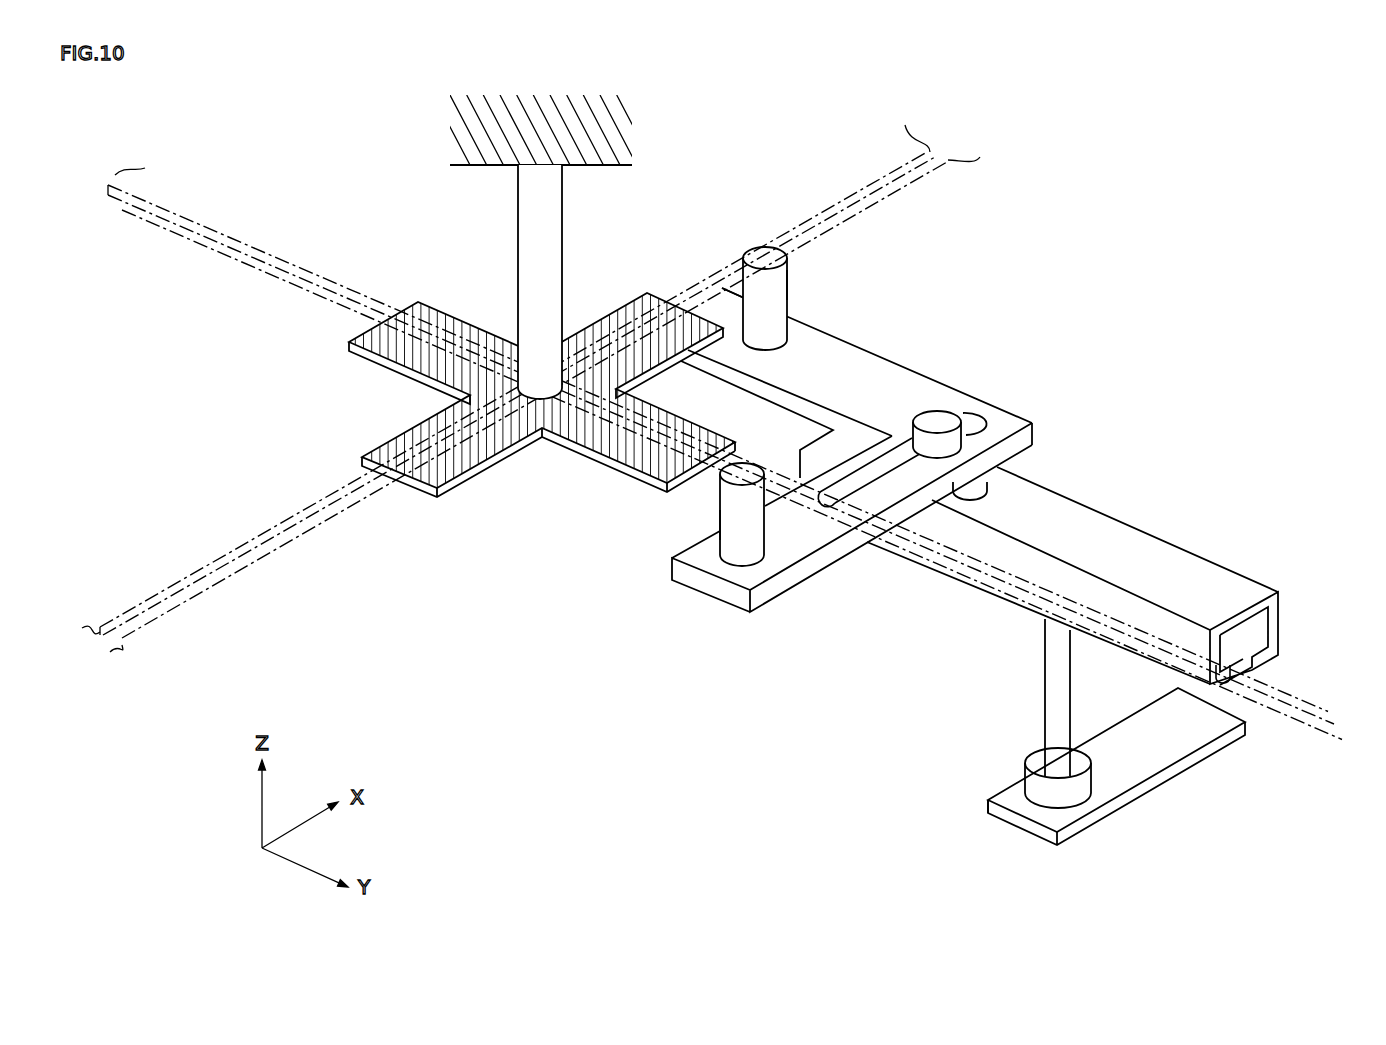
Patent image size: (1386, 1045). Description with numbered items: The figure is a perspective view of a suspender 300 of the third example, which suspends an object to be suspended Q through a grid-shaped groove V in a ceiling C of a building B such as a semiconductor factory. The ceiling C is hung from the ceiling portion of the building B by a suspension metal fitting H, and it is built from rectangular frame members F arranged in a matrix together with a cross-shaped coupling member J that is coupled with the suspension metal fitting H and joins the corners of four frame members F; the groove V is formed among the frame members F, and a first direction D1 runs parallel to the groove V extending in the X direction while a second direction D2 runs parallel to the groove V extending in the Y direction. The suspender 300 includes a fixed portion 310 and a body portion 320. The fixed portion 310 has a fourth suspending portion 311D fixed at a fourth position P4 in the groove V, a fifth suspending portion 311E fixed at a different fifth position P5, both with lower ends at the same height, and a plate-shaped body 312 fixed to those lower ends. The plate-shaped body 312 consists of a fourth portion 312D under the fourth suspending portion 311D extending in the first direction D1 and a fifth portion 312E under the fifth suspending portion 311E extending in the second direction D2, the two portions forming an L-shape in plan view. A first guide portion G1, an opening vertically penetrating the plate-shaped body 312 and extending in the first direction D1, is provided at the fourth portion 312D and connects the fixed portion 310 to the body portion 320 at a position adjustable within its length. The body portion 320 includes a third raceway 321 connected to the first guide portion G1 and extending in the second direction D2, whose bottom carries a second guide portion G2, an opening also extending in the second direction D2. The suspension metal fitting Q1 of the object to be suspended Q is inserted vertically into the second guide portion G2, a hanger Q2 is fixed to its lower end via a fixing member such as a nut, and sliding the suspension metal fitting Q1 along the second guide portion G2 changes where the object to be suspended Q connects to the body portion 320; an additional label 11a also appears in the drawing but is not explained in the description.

The cross-shaped member (of operation member 11) 11a is at (308, 283).
The coupling member J is at (437, 492).
The building B is at (620, 125).
The suspension metal fitting H is at (556, 190).
The suspender 300 is at (458, 634).
The fixed portion 310 is at (892, 319).
The fourth suspending portion 311D is at (735, 512).
The fifth suspending portion 311E is at (762, 256).
The plate-shaped body 312 is at (1041, 405).
The fourth portion 312D is at (790, 553).
The fifth portion 312E is at (893, 375).
The fourth position P4 is at (713, 524).
The fifth position P5 is at (798, 285).
The first guide portion G1 is at (897, 470).
The body portion 320 is at (1170, 520).
The third raceway 321 is at (1235, 583).
The second guide portion G2 is at (1240, 665).
The object to be suspended Q is at (1057, 863).
The suspension metal fitting Q1 is at (1055, 712).
The hanger Q2 is at (990, 803).
The ceiling C is at (1309, 774).
The first direction D1 is at (892, 808).
The second direction D2 is at (594, 842).
The grid-shaped groove V is at (108, 195).
The frame members F is at (525, 385).